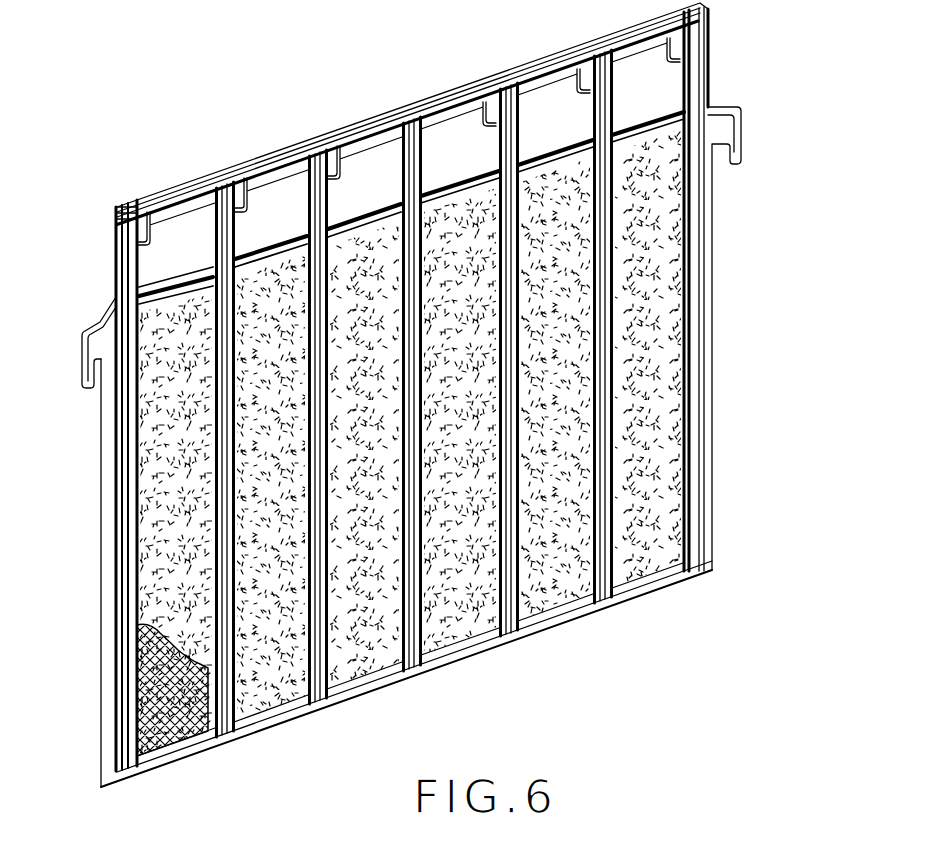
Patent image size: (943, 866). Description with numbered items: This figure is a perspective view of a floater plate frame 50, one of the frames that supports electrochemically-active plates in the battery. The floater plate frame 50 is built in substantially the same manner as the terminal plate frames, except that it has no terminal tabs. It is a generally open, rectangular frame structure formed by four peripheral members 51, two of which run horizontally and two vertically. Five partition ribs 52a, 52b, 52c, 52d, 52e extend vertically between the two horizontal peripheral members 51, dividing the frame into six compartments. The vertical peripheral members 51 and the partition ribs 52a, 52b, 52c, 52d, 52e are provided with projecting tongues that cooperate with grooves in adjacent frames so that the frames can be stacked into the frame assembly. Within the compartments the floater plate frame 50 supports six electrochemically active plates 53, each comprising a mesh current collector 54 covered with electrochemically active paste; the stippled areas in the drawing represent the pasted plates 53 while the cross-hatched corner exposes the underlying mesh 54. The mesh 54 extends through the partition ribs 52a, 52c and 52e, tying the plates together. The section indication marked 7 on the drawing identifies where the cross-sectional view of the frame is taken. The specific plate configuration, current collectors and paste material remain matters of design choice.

The floater plate frame 50 is at (444, 414).
The peripheral members 51 is at (708, 258).
The partition rib 52a is at (214, 723).
The partition rib 52b is at (312, 697).
The partition rib 52c is at (414, 650).
The partition rib 52d is at (506, 614).
The partition rib 52e is at (604, 577).
The electrochemically active plates 53 is at (160, 564).
The mesh current collector 54 is at (148, 706).
The section line 7- 7 is at (748, 56).